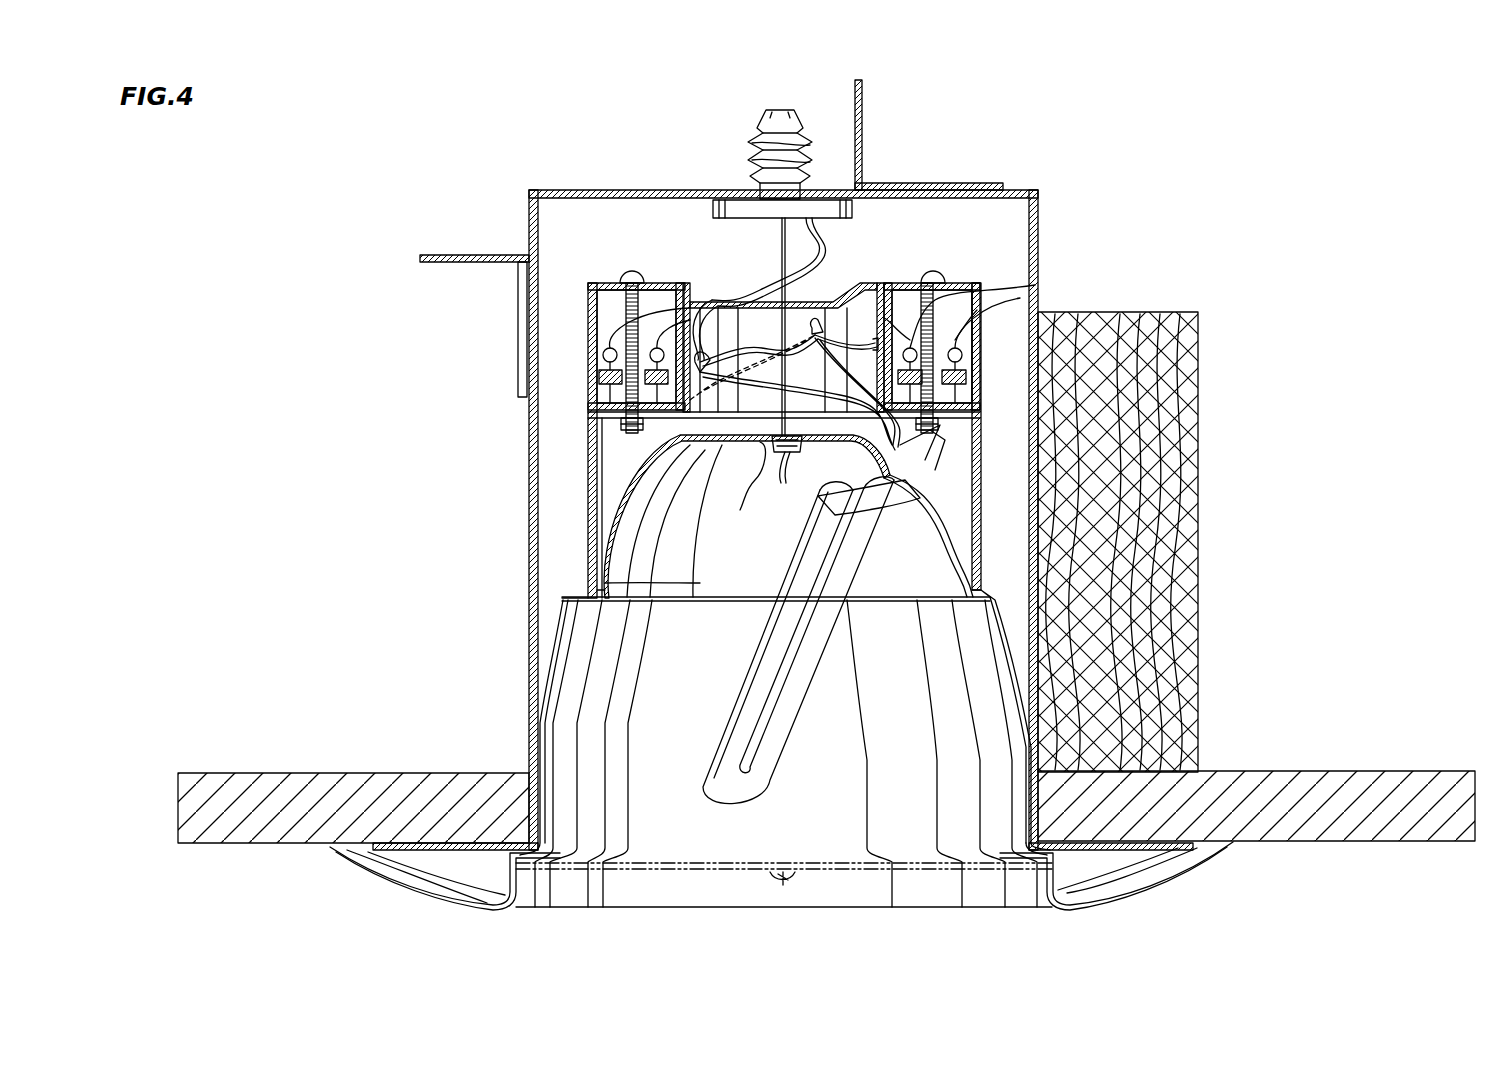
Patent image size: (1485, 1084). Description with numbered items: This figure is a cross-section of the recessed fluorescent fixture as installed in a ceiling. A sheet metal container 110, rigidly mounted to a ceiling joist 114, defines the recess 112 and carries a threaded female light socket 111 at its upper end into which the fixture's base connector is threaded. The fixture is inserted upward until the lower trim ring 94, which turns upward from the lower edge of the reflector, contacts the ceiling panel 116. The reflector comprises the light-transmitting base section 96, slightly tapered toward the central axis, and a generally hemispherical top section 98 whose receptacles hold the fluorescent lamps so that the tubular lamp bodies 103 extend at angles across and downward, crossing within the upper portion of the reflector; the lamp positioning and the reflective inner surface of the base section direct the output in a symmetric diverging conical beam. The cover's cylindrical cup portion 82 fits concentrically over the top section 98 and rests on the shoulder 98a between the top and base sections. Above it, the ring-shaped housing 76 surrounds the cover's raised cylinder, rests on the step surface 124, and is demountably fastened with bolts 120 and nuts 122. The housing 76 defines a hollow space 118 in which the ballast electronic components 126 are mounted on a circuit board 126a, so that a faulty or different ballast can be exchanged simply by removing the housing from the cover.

The housing 76 is at (588, 297).
The cylindrical cup portion 82 is at (590, 470).
The lower trim ring 94 is at (1175, 875).
The light-transmitting base section 96 is at (667, 838).
The top section 98 is at (737, 438).
The shoulder 98a is at (605, 585).
The tubular lamp body 103 is at (789, 738).
The sheet metal container 110 is at (1037, 212).
The threaded female light socket 111 is at (762, 118).
The recess 112 is at (1013, 217).
The ceiling joist 114 is at (1198, 437).
The ceiling panel 116 is at (318, 772).
The hollow space 118 is at (610, 300).
The bolt 120 is at (632, 270).
The nut 122 is at (612, 415).
The step surface 124 is at (600, 478).
The electronic components 126 is at (657, 348).
The circuit board 126a is at (648, 428).